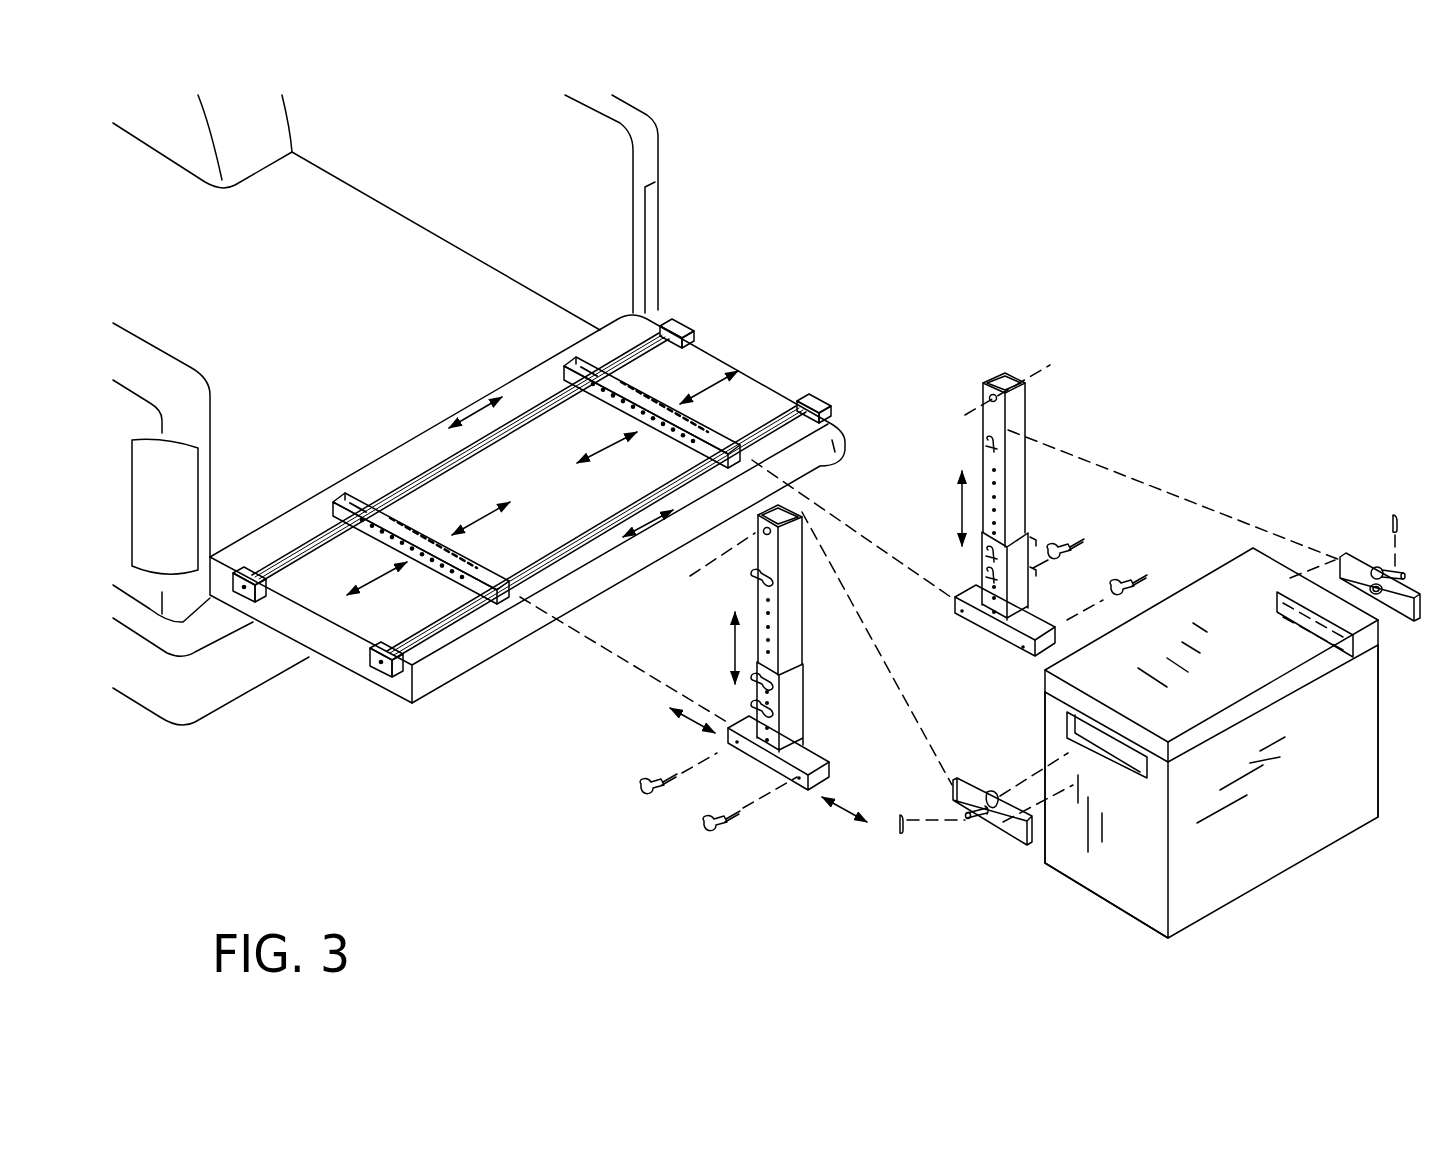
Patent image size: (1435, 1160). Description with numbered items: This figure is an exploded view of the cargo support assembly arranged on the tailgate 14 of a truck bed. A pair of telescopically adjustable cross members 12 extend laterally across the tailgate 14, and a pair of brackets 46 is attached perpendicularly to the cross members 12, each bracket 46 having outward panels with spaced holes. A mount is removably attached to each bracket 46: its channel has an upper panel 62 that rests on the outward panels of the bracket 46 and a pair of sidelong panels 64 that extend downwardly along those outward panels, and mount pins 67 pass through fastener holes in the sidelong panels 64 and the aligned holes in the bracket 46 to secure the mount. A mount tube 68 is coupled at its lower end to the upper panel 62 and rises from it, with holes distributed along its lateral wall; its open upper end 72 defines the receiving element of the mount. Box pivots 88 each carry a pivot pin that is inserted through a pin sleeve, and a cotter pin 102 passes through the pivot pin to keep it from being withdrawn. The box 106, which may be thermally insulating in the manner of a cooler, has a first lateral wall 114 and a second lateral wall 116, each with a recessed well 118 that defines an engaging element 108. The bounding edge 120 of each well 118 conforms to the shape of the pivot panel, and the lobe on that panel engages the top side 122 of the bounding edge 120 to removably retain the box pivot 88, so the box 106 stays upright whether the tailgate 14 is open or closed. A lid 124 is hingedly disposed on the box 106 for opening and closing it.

The cross member 12 is at (293, 560).
The tailgate 14 is at (463, 673).
The bracket 46 is at (643, 387).
The upper panel 62 is at (805, 760).
The sidelong panel 64 is at (767, 763).
The mount pin 67 is at (732, 836).
The mount tube 68 is at (802, 687).
The upper end 72 is at (792, 672).
The box pivot 88 is at (997, 845).
The cotter pin 102 is at (902, 833).
The box 106 is at (1378, 817).
The engaging element 108 is at (1147, 805).
The first lateral wall 114 is at (1088, 873).
The second lateral wall 116 is at (1376, 720).
The well 118 is at (1064, 726).
The bounding edge 120 is at (1080, 797).
The top side 122 is at (1080, 797).
The lid 124 is at (1278, 586).